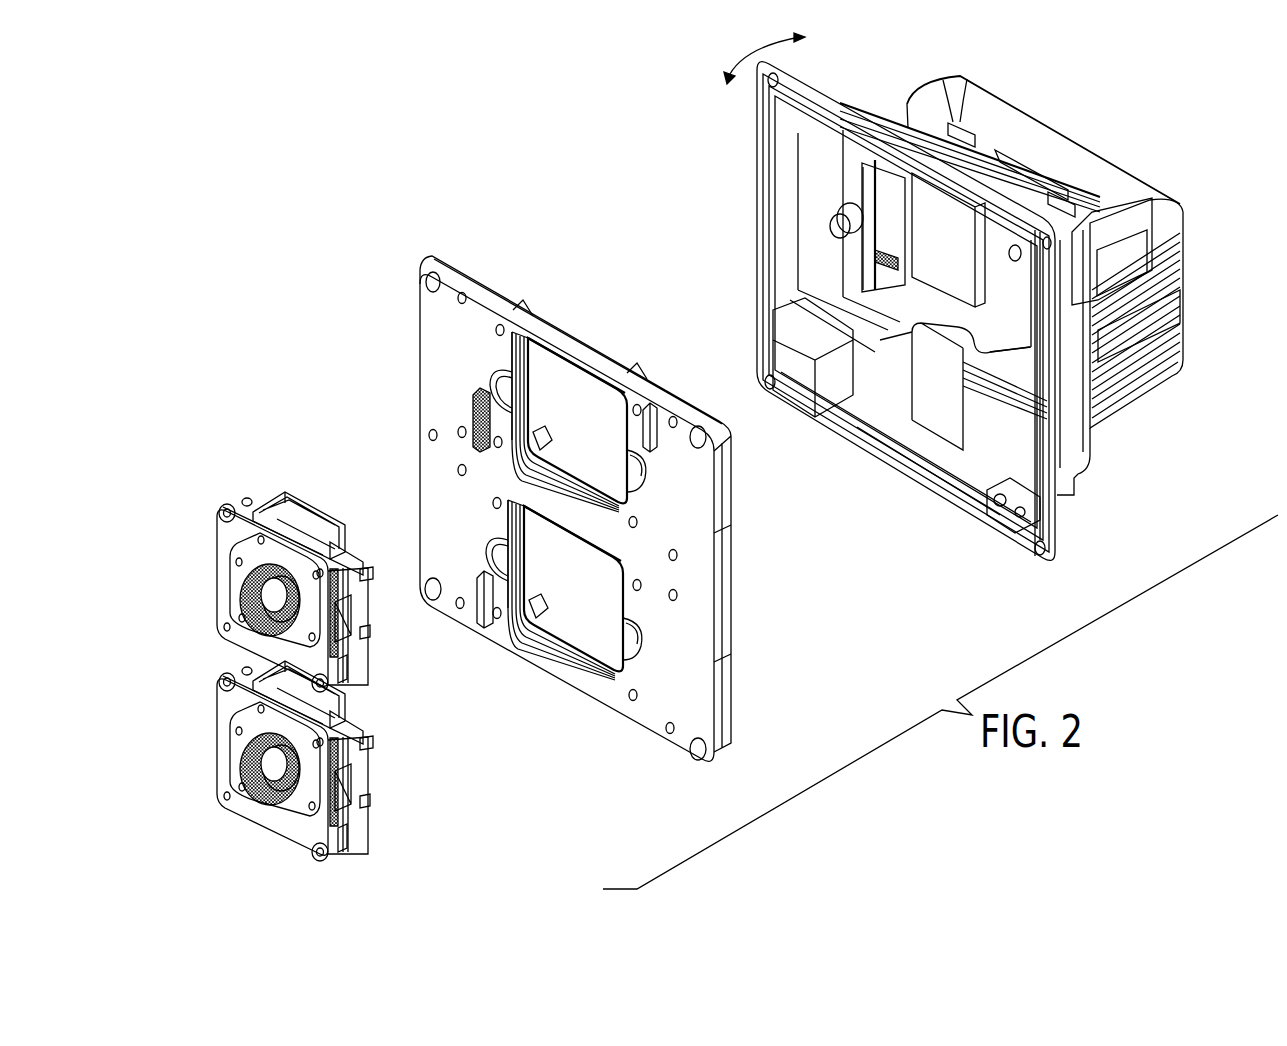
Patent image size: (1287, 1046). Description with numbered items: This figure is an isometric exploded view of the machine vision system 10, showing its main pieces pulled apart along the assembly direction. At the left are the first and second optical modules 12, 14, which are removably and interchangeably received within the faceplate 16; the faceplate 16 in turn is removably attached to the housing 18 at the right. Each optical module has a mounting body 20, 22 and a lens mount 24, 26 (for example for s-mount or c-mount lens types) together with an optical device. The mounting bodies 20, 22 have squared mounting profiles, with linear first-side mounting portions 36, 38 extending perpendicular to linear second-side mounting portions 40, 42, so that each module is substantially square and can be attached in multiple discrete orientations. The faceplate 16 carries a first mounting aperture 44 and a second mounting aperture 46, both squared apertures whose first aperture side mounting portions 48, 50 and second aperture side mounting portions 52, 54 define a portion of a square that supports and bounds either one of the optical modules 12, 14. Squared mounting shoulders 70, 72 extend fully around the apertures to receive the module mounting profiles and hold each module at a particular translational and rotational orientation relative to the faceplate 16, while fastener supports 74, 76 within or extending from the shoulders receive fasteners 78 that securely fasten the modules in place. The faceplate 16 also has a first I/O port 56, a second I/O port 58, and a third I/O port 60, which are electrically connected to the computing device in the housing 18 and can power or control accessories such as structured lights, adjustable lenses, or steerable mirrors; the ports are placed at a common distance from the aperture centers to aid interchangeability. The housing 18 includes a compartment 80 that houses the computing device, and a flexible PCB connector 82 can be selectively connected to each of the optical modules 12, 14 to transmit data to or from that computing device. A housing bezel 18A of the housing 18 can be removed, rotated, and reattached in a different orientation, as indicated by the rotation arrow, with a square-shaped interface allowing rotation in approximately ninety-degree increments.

The machine vision system 10 is at (886, 641).
The first optical module 12 is at (271, 546).
The second optical module 14 is at (265, 758).
The faceplate 16 is at (571, 493).
The housing 18 is at (945, 296).
The housing bezel 18A is at (1072, 430).
The mounting body 20 is at (228, 545).
The mounting body 22 is at (226, 728).
The lens mount 24 is at (250, 592).
The lens mount 26 is at (245, 765).
The first-side mounting portion 36 is at (343, 672).
The first-side mounting portion 38 is at (343, 848).
The second-side mounting portion 40 is at (335, 540).
The second-side mounting portion 42 is at (342, 712).
The first mounting aperture 44 is at (552, 347).
The second mounting aperture 46 is at (562, 672).
The first aperture side mounting portion 48 is at (622, 490).
The first aperture side mounting portion 50 is at (630, 608).
The second aperture side mounting portion 52 is at (590, 372).
The second aperture side mounting portion 54 is at (610, 555).
The first I/O port 56 is at (650, 410).
The second I/O port 58 is at (478, 615).
The third I/O port 60 is at (472, 420).
The mounting shoulder 70 is at (515, 335).
The mounting shoulder 72 is at (540, 637).
The fastener support 74 is at (545, 440).
The fastener support 76 is at (545, 615).
The fastener 78 is at (226, 508).
The compartment 80 is at (1020, 436).
The flexible PCB connector 82 is at (890, 228).